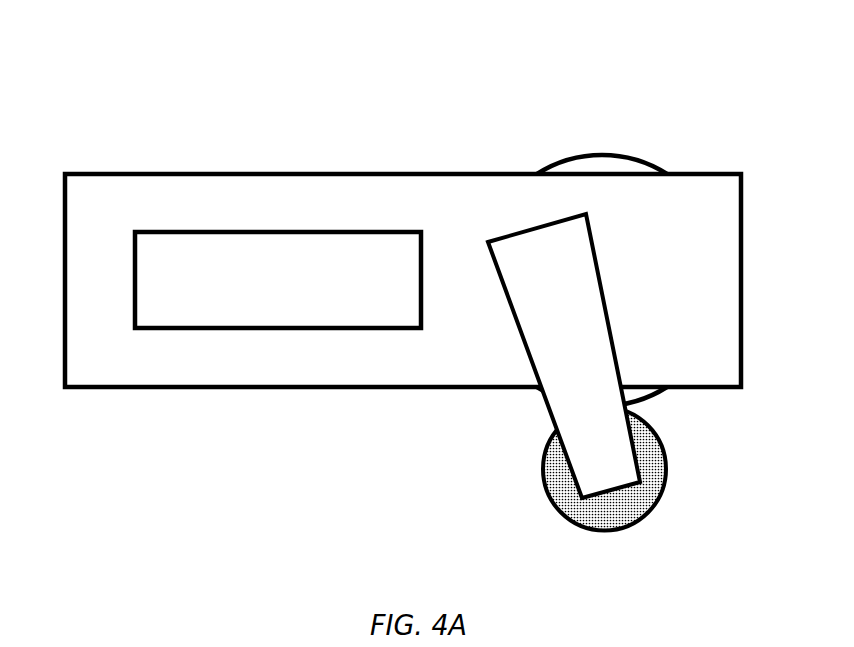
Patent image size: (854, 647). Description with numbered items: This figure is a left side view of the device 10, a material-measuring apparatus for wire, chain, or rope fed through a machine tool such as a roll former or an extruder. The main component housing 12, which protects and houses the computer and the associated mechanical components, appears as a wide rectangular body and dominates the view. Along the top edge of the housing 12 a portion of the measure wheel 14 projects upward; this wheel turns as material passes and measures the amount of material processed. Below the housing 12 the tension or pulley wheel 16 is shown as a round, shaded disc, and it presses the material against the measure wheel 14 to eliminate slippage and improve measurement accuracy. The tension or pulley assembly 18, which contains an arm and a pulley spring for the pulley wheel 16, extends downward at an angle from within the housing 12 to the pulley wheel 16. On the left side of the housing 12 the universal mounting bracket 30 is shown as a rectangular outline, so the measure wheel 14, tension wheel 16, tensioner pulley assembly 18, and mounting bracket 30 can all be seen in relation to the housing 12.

The device 10 is at (351, 52).
The main component housing 12 is at (112, 195).
The measure wheel 14 is at (607, 170).
The tension or pulley wheel 16 is at (653, 470).
The tension or pulley assembly 18 is at (563, 408).
The universal mounting bracket 30 is at (347, 258).